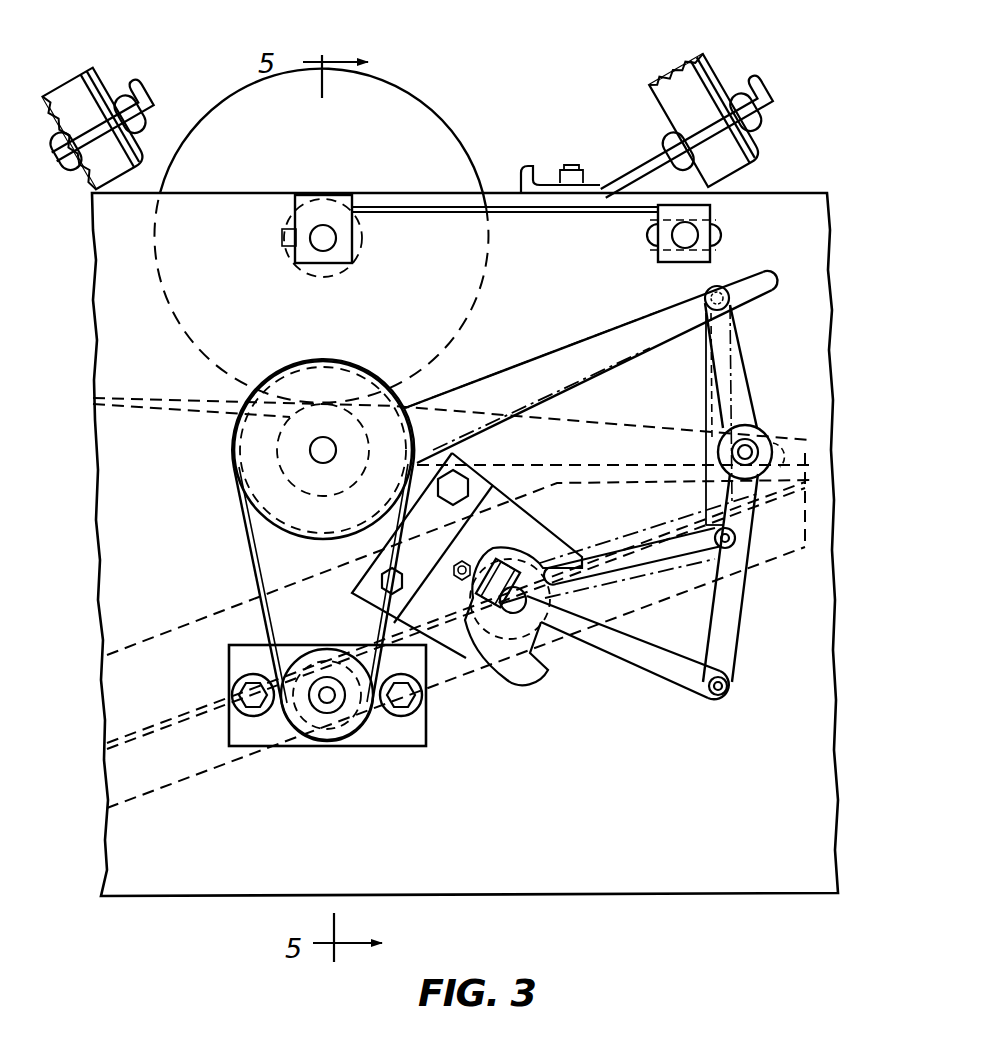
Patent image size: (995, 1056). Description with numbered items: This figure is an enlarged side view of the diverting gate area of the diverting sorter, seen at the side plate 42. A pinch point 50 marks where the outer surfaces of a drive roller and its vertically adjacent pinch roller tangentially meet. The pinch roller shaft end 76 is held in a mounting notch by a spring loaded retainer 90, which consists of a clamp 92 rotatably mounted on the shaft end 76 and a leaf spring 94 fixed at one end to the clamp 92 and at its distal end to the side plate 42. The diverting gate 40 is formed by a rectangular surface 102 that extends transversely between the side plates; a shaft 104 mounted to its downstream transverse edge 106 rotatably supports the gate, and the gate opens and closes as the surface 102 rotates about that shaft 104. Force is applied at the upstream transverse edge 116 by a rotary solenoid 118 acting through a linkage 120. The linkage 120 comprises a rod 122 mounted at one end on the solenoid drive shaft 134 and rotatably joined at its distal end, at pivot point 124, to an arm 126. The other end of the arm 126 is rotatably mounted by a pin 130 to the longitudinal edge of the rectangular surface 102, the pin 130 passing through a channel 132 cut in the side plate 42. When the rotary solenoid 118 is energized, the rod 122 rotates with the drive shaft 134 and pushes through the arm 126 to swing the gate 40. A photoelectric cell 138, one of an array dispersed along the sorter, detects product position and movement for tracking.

The diverting gate 40 is at (772, 283).
The side plate 42 is at (822, 214).
The pinch point 50 is at (317, 407).
The shaft end 76 is at (302, 217).
The spring loaded retainer 90 is at (501, 197).
The clamp 92 is at (300, 255).
The leaf spring 94 is at (462, 208).
The rectangular surface 102 is at (562, 345).
The shaft 104 is at (405, 408).
The downstream transverse edge 106 is at (388, 468).
The upstream transverse edge 116 is at (730, 305).
The rotary solenoid 118 is at (507, 683).
The linkage 120 is at (736, 710).
The rod 122 is at (688, 690).
The pivot point 124 is at (731, 689).
The arm 126 is at (740, 598).
The pin 130 is at (748, 320).
The channel 132 is at (753, 414).
The drive shaft 134 is at (553, 633).
The photoelectric cell 138 is at (716, 74).